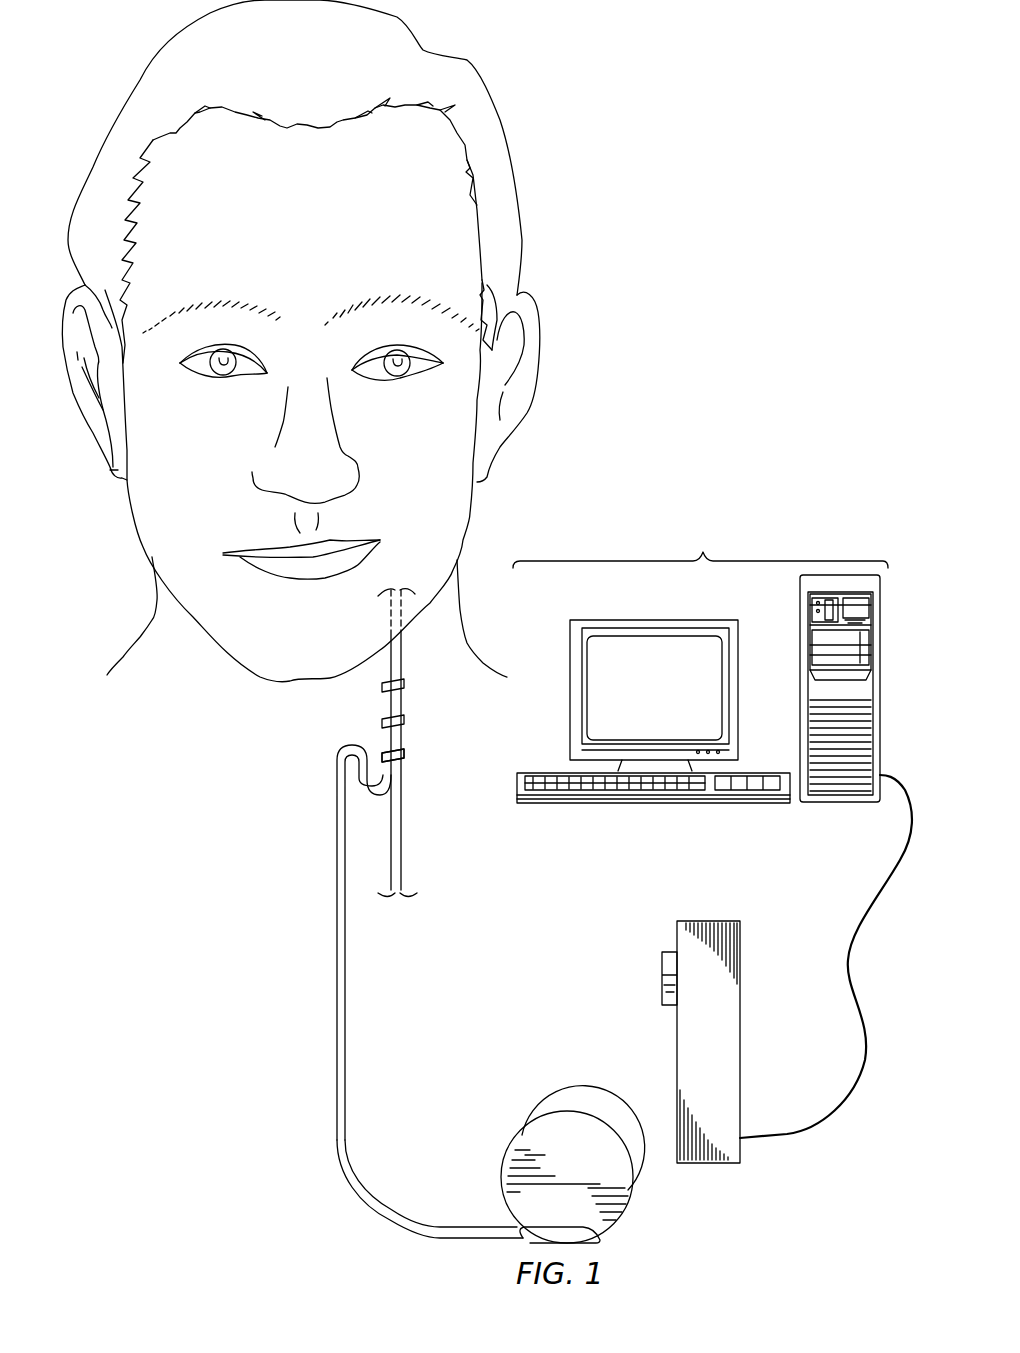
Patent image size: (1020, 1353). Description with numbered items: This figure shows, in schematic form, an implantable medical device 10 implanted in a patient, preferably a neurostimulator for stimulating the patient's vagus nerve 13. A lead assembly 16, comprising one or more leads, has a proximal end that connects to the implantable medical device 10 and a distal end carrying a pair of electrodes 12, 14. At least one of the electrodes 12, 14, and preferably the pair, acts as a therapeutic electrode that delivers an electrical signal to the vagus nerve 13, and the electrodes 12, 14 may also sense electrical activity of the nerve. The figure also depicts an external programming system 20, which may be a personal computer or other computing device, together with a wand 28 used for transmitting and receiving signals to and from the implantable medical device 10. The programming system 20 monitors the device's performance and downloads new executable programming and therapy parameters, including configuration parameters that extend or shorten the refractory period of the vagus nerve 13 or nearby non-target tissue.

The implantable medical device 10 is at (520, 1123).
The electrode 12 is at (405, 688).
The vagus nerve 13 is at (403, 657).
The electrode 14 is at (405, 722).
The lead assembly 16 is at (337, 940).
The programming system 20 is at (700, 664).
The wand 28 is at (677, 938).